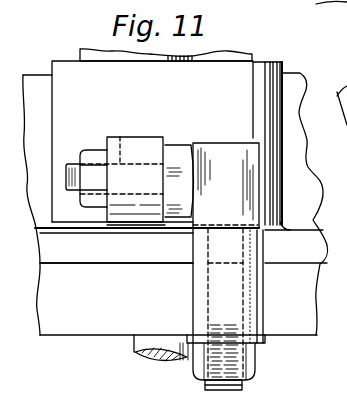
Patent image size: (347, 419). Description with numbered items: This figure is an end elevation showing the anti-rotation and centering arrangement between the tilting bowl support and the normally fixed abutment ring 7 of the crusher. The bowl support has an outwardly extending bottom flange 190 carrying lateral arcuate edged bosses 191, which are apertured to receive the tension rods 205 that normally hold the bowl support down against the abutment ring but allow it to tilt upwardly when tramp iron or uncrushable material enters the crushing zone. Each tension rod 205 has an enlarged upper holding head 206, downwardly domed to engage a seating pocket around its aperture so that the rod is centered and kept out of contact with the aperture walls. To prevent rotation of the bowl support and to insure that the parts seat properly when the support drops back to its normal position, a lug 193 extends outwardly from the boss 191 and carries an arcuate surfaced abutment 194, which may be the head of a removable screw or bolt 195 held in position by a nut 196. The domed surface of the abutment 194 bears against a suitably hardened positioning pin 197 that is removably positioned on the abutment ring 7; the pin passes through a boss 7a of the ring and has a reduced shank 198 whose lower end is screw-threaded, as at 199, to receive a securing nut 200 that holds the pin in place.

The abutment ring 7 is at (103, 318).
The boss 7a is at (259, 247).
The bottom flange 190 is at (290, 93).
The boss 191 is at (256, 66).
The lug 193 is at (135, 145).
The arcuate surfaced abutment 194 is at (175, 150).
The screw or bolt 195 is at (120, 135).
The nut 196 is at (91, 150).
The positioning pin 197 is at (243, 173).
The reduced shank 198 is at (245, 285).
The screw-threaded end 199 is at (243, 386).
The securing nut 200 is at (192, 365).
The tension rod 205 is at (135, 350).
The holding head 206 is at (92, 46).